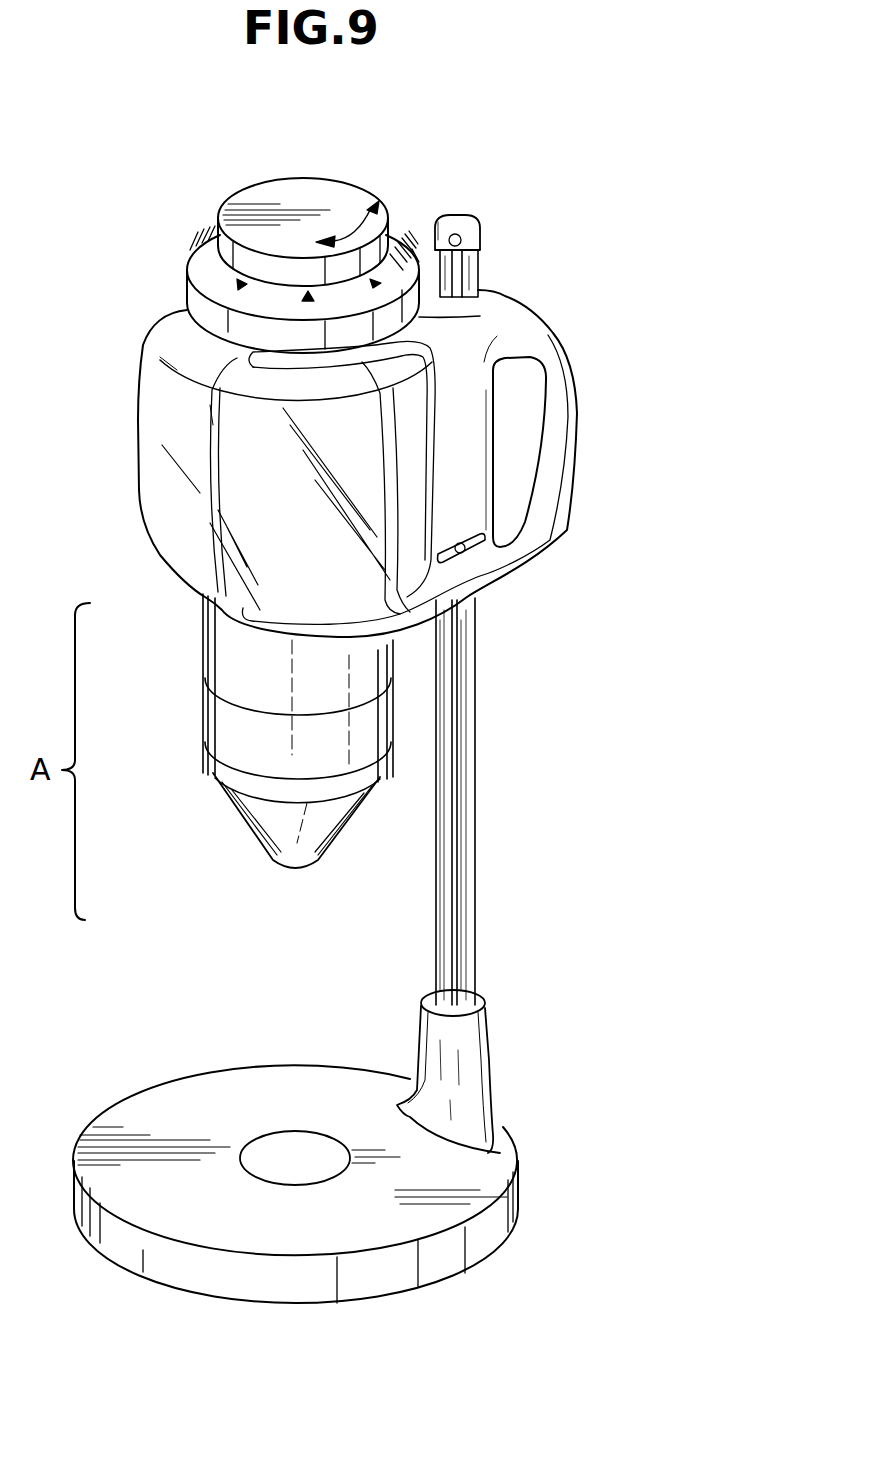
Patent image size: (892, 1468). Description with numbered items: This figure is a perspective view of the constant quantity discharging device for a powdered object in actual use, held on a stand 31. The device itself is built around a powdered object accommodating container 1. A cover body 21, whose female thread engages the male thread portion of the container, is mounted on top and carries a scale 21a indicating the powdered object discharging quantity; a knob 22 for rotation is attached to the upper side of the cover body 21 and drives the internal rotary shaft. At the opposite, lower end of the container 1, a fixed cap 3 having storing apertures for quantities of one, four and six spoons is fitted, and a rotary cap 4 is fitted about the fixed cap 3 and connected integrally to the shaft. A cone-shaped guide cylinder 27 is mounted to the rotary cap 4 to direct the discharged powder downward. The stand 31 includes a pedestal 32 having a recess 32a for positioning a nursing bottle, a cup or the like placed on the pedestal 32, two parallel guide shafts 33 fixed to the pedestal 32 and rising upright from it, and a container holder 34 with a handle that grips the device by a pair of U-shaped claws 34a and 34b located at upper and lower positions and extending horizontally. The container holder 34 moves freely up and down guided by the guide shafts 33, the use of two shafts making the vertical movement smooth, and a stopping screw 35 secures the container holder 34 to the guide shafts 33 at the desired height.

The powdered object accommodating container 1 is at (152, 455).
The fixed cap 3 is at (215, 658).
The rotary cap 4 is at (237, 742).
The cover body 21 is at (207, 308).
The scale 21a is at (240, 282).
The knob for rotation 22 is at (307, 200).
The cone-shaped guide cylinder 27 is at (280, 842).
The stand 31 is at (517, 1097).
The pedestal 32 is at (488, 1228).
The recess 32a is at (250, 1140).
The guide shafts 33 is at (467, 848).
The container holder 34 is at (557, 365).
The U-shaped claw 34a is at (492, 330).
The U-shaped claw 34b is at (337, 627).
The stopping screw 35 is at (477, 540).